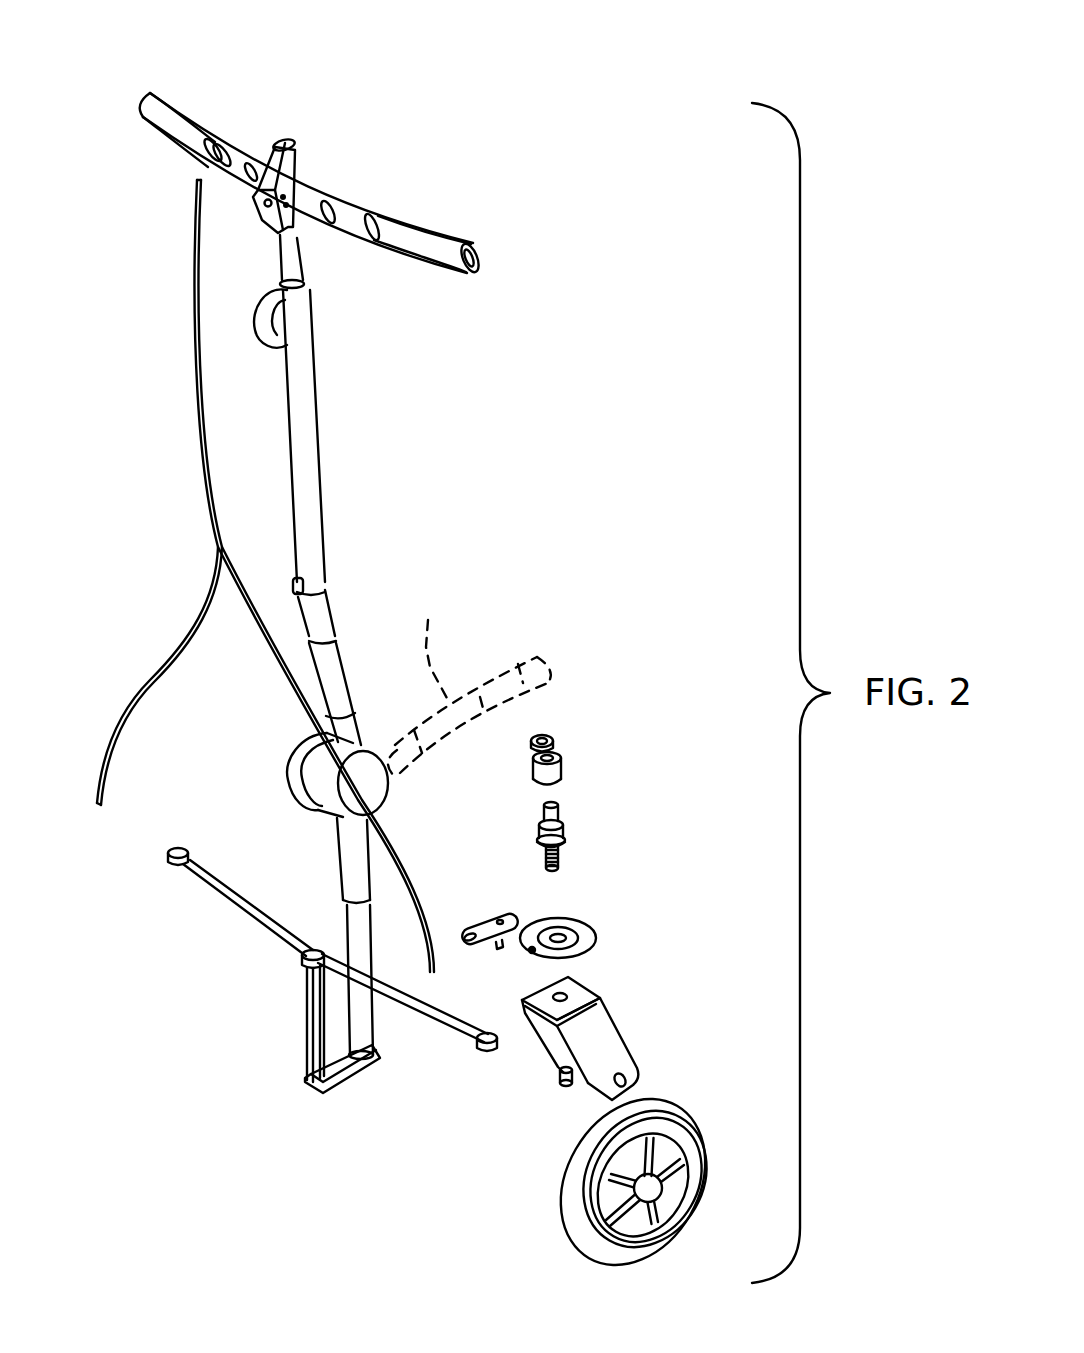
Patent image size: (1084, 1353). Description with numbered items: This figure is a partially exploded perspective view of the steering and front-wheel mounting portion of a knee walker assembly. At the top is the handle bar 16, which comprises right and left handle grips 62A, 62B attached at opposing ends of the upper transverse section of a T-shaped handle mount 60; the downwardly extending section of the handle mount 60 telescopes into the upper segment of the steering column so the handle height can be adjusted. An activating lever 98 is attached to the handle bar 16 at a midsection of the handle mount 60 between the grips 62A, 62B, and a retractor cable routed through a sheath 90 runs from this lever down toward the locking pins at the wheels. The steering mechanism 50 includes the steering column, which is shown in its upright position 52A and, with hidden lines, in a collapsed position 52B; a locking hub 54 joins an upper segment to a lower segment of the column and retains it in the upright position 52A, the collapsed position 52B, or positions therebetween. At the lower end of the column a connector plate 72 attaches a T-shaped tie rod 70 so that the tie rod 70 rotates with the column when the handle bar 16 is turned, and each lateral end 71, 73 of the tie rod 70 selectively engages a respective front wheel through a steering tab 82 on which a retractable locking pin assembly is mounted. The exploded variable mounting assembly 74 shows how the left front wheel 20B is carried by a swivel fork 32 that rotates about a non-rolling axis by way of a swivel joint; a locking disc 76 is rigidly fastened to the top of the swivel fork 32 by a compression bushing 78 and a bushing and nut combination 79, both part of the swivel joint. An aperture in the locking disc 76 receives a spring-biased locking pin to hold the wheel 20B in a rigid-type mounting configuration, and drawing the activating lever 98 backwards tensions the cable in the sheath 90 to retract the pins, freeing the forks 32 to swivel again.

The handle bar 16 is at (348, 210).
The right handle grip 62A is at (170, 117).
The left handle grip 62B is at (427, 233).
The activating lever 98 is at (282, 147).
The T-shaped handle mount 60 is at (290, 253).
The sheath 90 is at (193, 433).
The upright position 52A is at (322, 467).
The collapsed position 52B is at (469, 678).
The steering mechanism 50 is at (470, 490).
The locking hub 54 is at (297, 760).
The lateral end of tie rod 71 is at (170, 862).
The T-shaped tie rod 70 is at (268, 926).
The lateral end of tie rod 73 is at (480, 1038).
The connector plate 72 is at (342, 1083).
The variable mounting assembly 74 is at (680, 800).
The bushing and nut combination 79 is at (557, 772).
The compression bushing 78 is at (562, 830).
The locking disc 76 is at (585, 923).
The steering tab 82 is at (462, 900).
The swivel fork 32 is at (620, 1023).
The left front wheel 20B is at (573, 1193).